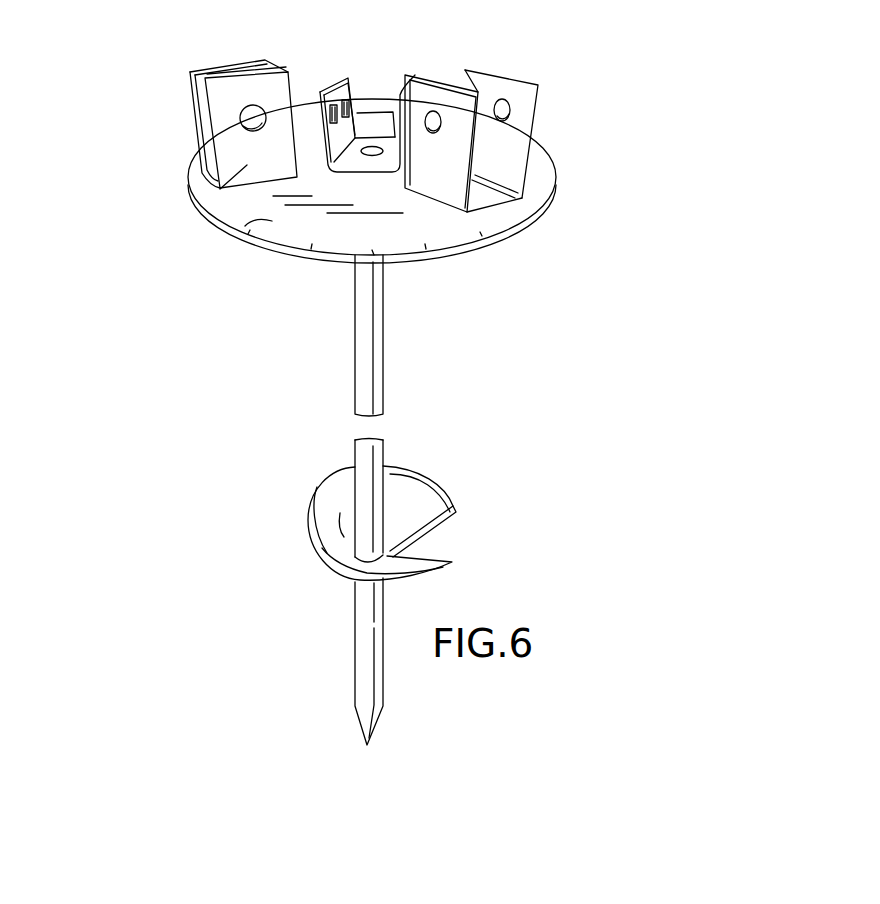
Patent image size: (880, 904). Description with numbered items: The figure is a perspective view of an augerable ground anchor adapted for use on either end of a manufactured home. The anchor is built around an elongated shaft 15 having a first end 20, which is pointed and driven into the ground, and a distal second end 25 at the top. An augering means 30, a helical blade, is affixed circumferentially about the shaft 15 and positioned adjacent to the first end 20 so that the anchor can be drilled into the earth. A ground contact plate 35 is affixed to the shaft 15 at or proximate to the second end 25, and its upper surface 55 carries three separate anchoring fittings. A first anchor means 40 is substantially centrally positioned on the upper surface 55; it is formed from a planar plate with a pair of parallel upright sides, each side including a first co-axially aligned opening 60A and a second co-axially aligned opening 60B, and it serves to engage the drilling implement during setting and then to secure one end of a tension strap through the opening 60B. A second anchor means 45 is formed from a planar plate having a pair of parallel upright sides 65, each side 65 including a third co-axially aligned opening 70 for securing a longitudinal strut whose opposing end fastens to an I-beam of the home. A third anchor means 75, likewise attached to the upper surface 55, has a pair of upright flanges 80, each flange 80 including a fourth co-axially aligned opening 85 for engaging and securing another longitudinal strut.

The shaft 15 is at (378, 374).
The first end 20 is at (355, 727).
The second end 25 is at (338, 266).
The augering means 30 is at (405, 502).
The ground contact plate 35 is at (393, 216).
The first anchor means 40 is at (292, 91).
The second anchor means 45 is at (521, 160).
The upper surface 55 is at (246, 225).
The first co-axially aligned opening 60A is at (328, 106).
The second co-axially aligned opening 60B is at (344, 99).
The upright sides 65 is at (551, 134).
The third co-axially aligned opening 70 is at (511, 110).
The third anchor means 75 is at (168, 119).
The flanges 80 is at (216, 193).
The fourth co-axially aligned opening 85 is at (240, 118).